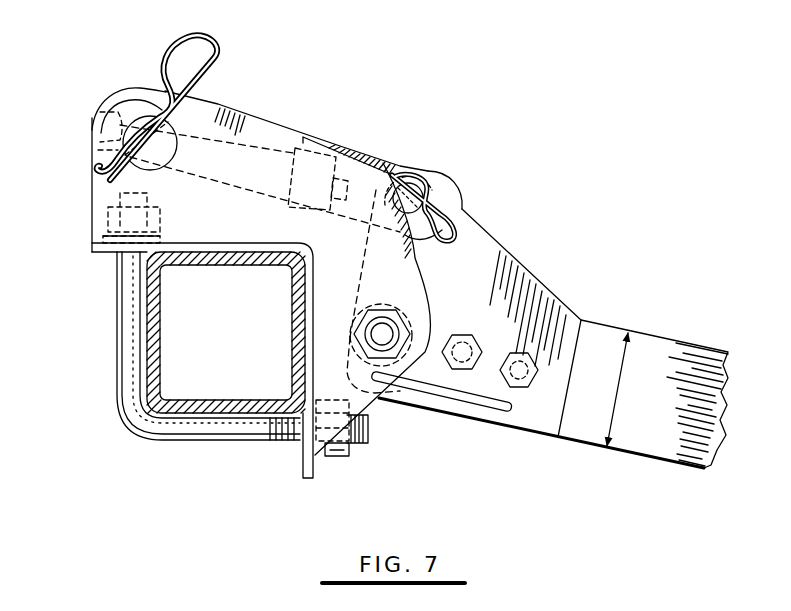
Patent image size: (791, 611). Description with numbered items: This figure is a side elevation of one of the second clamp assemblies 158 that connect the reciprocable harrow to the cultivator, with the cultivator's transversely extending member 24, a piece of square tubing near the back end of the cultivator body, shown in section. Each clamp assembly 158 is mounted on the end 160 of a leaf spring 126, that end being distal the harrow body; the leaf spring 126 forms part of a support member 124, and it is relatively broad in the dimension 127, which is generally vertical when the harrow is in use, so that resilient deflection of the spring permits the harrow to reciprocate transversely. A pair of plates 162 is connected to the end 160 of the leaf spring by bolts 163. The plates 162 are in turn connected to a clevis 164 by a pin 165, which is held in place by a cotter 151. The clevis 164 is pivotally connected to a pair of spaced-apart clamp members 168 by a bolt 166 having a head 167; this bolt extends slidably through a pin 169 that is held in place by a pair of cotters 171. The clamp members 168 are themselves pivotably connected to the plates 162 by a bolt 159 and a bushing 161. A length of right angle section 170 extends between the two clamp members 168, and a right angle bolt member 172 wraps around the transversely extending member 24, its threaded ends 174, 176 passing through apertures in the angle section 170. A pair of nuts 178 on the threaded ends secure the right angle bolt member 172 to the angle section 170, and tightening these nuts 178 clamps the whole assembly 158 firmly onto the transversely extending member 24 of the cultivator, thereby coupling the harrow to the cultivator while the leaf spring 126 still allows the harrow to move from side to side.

The transversely extending member 24 is at (250, 266).
The support member 124 is at (590, 455).
The leaf spring 126 is at (648, 456).
The dimension 127 is at (616, 392).
The cotter 151 is at (462, 220).
The second clamp assembly 158 is at (570, 232).
The bolt 159 is at (386, 334).
The end 160 is at (660, 340).
The bushing 161 is at (380, 305).
The plate 162 is at (540, 300).
The bolt 163 is at (515, 352).
The clevis 164 is at (385, 160).
The pin 165 is at (414, 200).
The bolt 166 is at (264, 158).
The head 167 is at (106, 128).
The clamp member 168 is at (240, 118).
The pin 169 is at (168, 150).
The right angle section 170 is at (255, 240).
The cotter 171 is at (214, 54).
The right angle bolt member 172 is at (127, 407).
The threaded end 174 is at (118, 193).
The threaded end 176 is at (368, 430).
The nut 178 is at (104, 234).